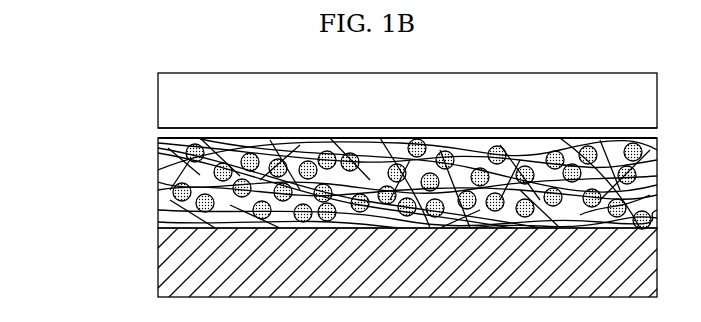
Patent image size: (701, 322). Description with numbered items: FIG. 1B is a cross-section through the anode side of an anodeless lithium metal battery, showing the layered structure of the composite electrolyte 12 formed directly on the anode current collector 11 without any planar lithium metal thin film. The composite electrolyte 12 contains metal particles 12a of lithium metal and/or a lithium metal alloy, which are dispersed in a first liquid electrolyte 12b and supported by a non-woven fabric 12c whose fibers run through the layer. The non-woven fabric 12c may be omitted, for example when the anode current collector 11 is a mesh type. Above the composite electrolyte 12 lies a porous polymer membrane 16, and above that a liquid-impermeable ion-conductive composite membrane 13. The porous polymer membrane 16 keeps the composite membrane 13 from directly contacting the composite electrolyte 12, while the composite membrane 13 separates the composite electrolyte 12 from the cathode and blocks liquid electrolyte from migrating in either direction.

The anode current collector 11 is at (172, 254).
The composite electrolyte 12 is at (70, 163).
The metal particle 12a is at (158, 192).
The first liquid electrolyte 12b is at (190, 210).
The non-woven fabric 12c is at (158, 172).
The liquid-impermeable ion-conductive composite membrane 13 is at (158, 96).
The porous polymer membrane 16 is at (158, 131).